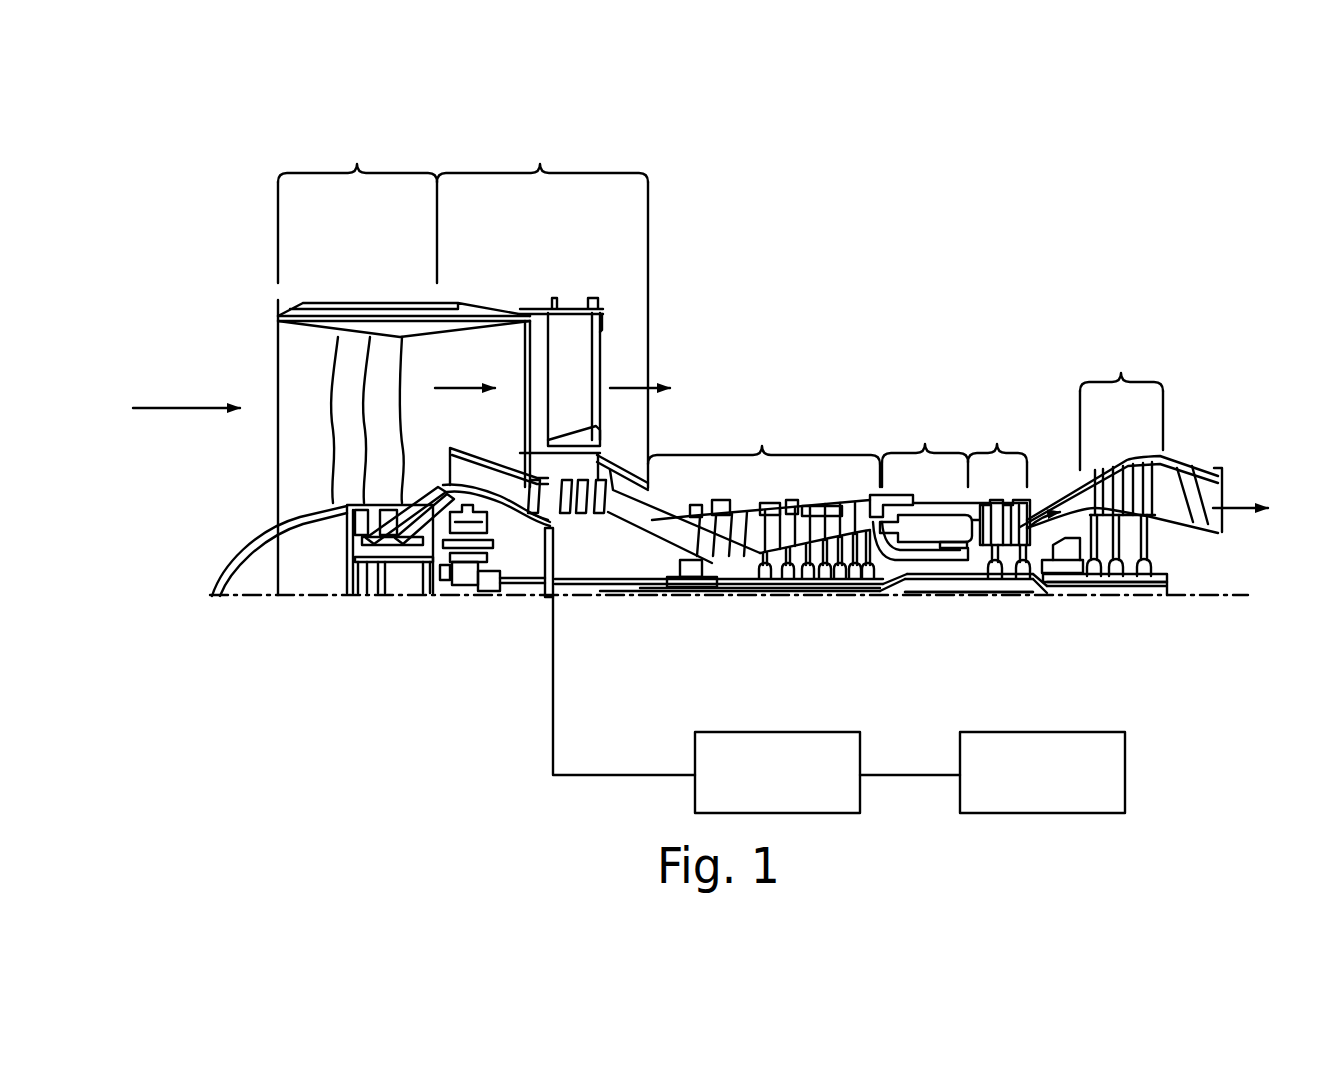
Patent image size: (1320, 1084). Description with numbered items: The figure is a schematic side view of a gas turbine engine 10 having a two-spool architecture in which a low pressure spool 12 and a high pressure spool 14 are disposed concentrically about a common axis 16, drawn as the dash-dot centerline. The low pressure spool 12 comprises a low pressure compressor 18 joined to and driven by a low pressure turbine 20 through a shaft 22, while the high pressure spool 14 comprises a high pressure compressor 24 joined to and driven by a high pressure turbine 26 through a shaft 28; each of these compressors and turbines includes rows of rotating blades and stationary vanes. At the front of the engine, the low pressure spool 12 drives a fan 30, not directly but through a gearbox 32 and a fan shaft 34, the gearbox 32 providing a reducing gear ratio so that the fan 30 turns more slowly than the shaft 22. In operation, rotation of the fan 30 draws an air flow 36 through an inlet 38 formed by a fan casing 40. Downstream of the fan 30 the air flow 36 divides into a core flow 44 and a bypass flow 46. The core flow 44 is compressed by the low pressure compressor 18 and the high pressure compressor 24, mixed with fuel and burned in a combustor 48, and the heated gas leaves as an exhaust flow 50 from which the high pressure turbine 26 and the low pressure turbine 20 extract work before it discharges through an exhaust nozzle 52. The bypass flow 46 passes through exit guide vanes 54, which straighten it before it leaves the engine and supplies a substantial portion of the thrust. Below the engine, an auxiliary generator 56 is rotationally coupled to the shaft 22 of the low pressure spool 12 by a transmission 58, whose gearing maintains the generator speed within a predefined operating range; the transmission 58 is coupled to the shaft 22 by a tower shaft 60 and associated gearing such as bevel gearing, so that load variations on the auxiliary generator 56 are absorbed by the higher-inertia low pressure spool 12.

The gas turbine engine 10 is at (950, 280).
The low pressure spool 12 is at (1112, 612).
The high pressure spool 14 is at (952, 590).
The axis 16 is at (1233, 597).
The low pressure compressor 18 is at (542, 309).
The low pressure turbine 20 is at (1125, 459).
The shaft 22 is at (1063, 560).
The high pressure compressor 24 is at (764, 496).
The high pressure turbine 26 is at (999, 495).
The shaft 28 is at (903, 573).
The fan 30 is at (357, 208).
The gearbox 32 is at (470, 612).
The fan shaft 34 is at (413, 545).
The air flow 36 is at (186, 389).
The inlet 38 is at (254, 528).
The fan casing 40 is at (459, 313).
The core flow 44 is at (483, 479).
The bypass flow 46 is at (552, 369).
The combustor 48 is at (948, 486).
The exhaust flow 50 is at (1028, 527).
The exhaust nozzle 52 is at (1157, 462).
The exit guide vanes 54 is at (585, 383).
The auxiliary generator 56 is at (1057, 787).
The transmission 58 is at (791, 787).
The tower shaft 60 is at (555, 668).